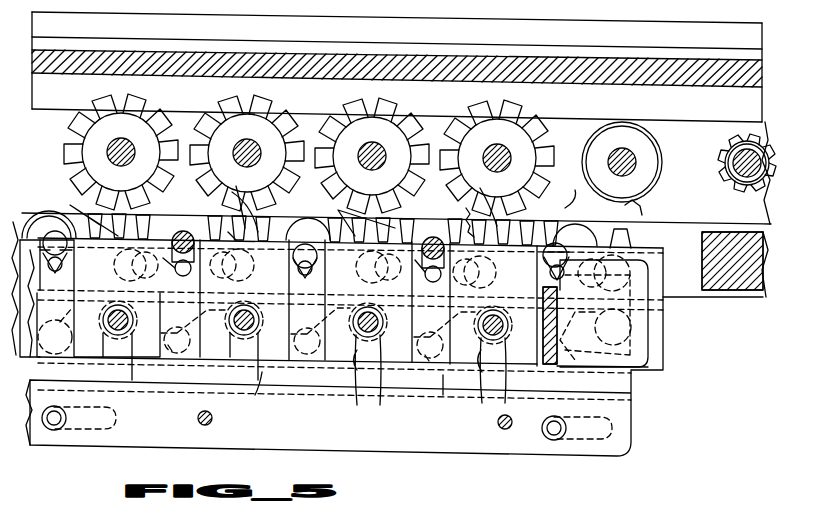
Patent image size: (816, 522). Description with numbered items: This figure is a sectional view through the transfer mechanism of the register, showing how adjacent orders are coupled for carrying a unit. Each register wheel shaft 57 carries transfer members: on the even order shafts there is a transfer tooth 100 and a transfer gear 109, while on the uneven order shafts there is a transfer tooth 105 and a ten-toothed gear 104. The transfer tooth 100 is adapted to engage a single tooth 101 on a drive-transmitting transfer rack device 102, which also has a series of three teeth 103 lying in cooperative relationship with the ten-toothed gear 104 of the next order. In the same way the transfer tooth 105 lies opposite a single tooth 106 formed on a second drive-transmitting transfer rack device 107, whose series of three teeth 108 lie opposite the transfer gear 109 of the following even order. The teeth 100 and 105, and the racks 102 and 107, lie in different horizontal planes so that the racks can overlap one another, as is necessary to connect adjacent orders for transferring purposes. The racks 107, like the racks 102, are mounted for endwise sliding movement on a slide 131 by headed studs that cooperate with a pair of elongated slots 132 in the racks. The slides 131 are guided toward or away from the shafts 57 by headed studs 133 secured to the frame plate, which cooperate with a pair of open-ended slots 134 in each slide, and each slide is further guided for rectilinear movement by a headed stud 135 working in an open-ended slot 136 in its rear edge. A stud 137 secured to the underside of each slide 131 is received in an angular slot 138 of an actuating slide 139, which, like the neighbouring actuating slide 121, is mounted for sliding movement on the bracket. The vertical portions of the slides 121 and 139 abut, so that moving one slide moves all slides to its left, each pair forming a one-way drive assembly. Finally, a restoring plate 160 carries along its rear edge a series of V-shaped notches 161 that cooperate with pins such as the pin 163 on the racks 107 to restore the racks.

The register wheel shaft 57 is at (502, 160).
The transfer tooth 100 is at (138, 204).
The single tooth 101 is at (622, 234).
The drive-transmitting transfer rack device 102 is at (580, 256).
The series of three teeth 103 is at (506, 213).
The ten-toothed gear 104 is at (230, 104).
The transfer tooth 105 is at (268, 206).
The single tooth 106 is at (245, 228).
The drive-transmitting transfer rack device 107 is at (228, 232).
The series of three teeth 108 is at (215, 215).
The transfer gear 109 is at (78, 156).
The actuating slide 121 is at (626, 390).
The slide 131 is at (552, 330).
The elongated slot 132 is at (146, 268).
The headed stud 133 is at (372, 380).
The open-ended slot 134 is at (360, 392).
The headed stud 135 is at (183, 230).
The open-ended slot 136 is at (430, 266).
The stud 137 is at (155, 343).
The angular slot 138 is at (220, 346).
The actuating slide 139 is at (250, 380).
The restoring plate 160 is at (316, 283).
The V-shaped notch 161 is at (297, 259).
The pin 163 is at (165, 278).